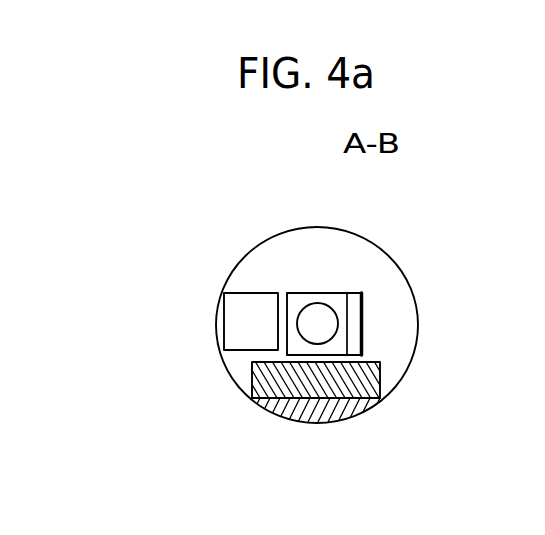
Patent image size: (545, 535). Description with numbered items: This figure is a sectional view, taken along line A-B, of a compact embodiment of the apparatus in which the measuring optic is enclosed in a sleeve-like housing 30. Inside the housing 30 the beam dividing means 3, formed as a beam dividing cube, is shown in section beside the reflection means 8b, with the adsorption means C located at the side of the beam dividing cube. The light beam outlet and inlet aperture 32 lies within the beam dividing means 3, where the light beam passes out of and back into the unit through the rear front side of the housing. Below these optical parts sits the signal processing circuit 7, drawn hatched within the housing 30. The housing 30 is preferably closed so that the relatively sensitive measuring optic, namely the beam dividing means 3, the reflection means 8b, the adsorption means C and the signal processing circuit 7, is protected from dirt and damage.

The reflection means 8b is at (232, 312).
The beam dividing means 3 is at (332, 306).
The adsorption means C is at (363, 315).
The light beam outlet and inlet aperture 32 is at (323, 334).
The signal processing circuit 7 is at (260, 375).
The housing 30 is at (287, 412).